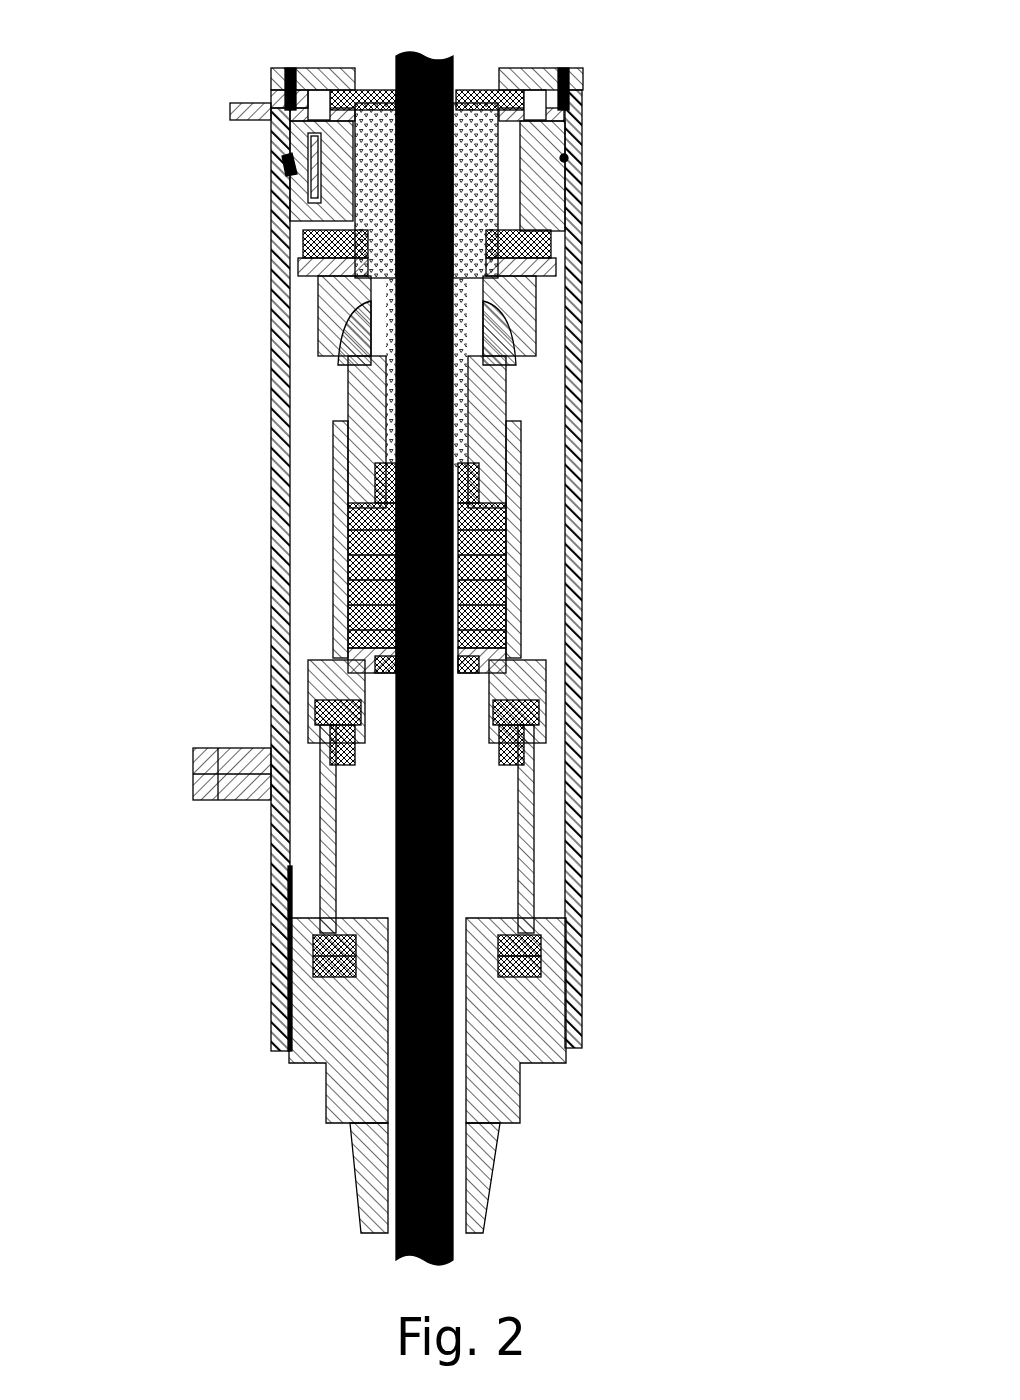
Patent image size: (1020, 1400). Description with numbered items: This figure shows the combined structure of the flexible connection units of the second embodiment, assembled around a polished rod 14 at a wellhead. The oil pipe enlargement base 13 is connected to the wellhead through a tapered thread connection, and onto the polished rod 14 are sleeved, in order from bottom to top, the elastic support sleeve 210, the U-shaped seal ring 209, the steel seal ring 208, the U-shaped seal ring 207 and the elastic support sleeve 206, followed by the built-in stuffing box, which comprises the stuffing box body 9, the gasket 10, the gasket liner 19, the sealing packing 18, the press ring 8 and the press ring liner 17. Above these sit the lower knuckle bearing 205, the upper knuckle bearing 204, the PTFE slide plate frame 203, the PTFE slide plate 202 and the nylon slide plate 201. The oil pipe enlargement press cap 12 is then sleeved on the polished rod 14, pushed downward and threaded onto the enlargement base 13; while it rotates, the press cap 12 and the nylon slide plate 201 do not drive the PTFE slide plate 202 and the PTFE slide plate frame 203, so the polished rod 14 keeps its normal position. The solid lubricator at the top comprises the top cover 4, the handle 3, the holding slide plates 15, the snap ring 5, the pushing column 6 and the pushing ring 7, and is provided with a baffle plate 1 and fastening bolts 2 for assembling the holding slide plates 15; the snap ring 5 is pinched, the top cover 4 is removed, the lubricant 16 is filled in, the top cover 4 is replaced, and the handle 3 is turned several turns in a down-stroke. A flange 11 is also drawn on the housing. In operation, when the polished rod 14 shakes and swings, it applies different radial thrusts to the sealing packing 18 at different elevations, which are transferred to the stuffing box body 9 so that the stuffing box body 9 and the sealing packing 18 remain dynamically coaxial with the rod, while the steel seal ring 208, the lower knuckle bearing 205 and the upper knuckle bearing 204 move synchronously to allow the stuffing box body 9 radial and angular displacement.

The baffle plate 1 is at (263, 67).
The fastening bolts 2 is at (270, 83).
The handle 3 is at (243, 108).
The top cover 4 is at (263, 147).
The snap ring 5 is at (282, 150).
The pushing column 6 is at (312, 190).
The pushing ring 7 is at (333, 200).
The press ring 8 is at (338, 383).
The stuffing box body 9 is at (325, 535).
The gasket 10 is at (345, 652).
The mounting flange 11 is at (215, 738).
The oil pipe enlargement press cap 12 is at (278, 948).
The oil pipe enlargement base 13 is at (300, 1045).
The polished rod 14 is at (386, 1182).
The holding slide plates 15 is at (510, 82).
The lubricant 16 is at (520, 150).
The press ring liner 17 is at (468, 490).
The sealing packing 18 is at (485, 572).
The gasket liner 19 is at (470, 657).
The nylon slide plate 201 is at (547, 228).
The PTFE slide plate 202 is at (532, 243).
The PTFE slide plate frame 203 is at (562, 265).
The upper knuckle bearing 204 is at (536, 310).
The lower knuckle bearing 205 is at (510, 356).
The elastic support sleeve 206 is at (522, 706).
The U-shaped seal ring 207 is at (505, 730).
The steel seal ring 208 is at (525, 822).
The U-shaped seal ring 209 is at (500, 920).
The elastic support sleeve 210 is at (518, 955).